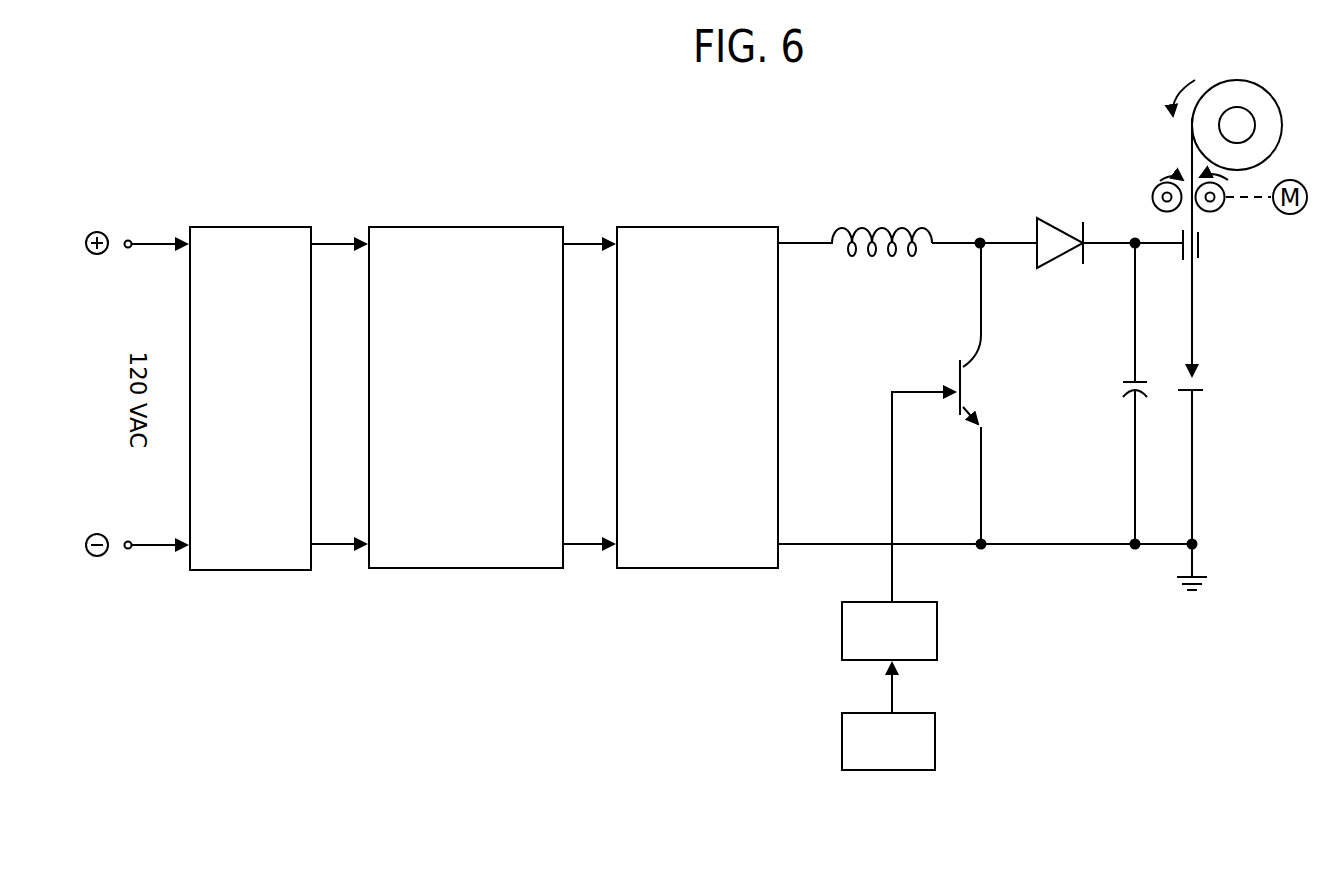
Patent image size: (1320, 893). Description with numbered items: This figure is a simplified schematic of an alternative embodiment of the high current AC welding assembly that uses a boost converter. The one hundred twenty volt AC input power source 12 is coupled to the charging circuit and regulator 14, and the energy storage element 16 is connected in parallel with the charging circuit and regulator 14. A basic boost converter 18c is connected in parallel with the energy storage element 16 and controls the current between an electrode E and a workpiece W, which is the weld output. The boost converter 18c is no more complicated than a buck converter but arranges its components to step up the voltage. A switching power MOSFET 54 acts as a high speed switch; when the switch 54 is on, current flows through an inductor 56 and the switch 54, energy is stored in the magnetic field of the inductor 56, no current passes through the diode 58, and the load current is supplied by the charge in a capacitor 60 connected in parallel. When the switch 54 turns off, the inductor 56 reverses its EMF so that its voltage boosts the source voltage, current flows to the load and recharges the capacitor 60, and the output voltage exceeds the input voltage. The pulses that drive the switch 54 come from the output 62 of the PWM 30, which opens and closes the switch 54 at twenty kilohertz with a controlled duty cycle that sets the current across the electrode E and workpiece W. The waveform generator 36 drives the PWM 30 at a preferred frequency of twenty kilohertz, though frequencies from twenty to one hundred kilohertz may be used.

The 120 volt AC input power source 12 is at (262, 227).
The charging circuit and regulator 14 is at (470, 227).
The energy storage element 16 is at (701, 227).
The inductor 56 is at (902, 223).
The diode 58 is at (1062, 218).
The switching power MOSFET 54 is at (967, 372).
The output of the PWM 62 is at (892, 447).
The capacitor 60 is at (1128, 395).
The PWM 30 is at (842, 632).
The waveform generator 36 is at (842, 747).
The basic boost converter 18c is at (964, 561).
The electrode E is at (1205, 375).
The workpiece W is at (1205, 393).